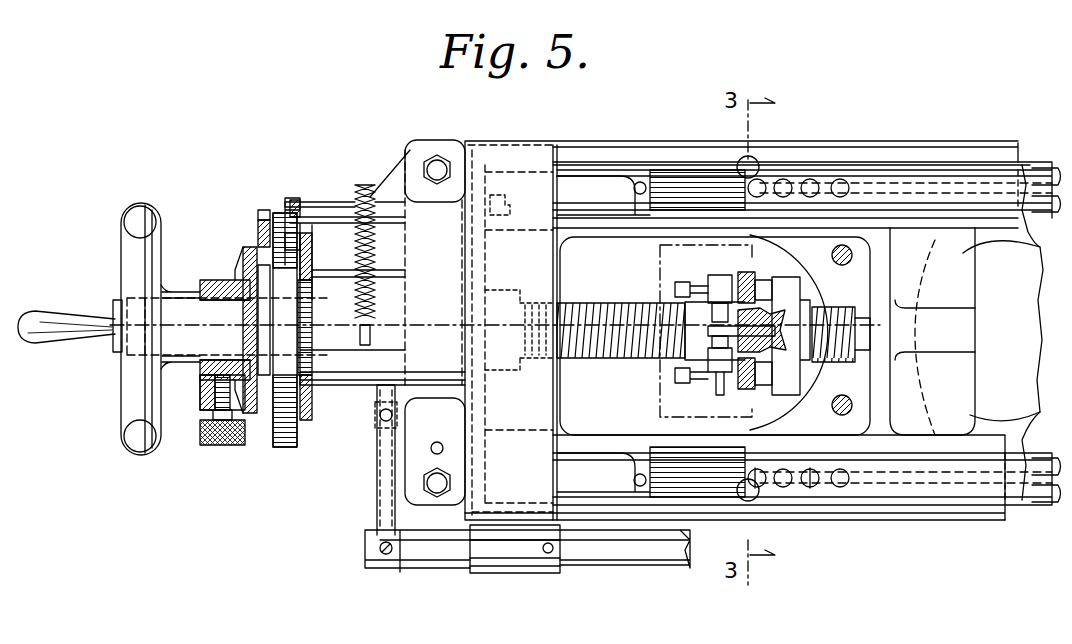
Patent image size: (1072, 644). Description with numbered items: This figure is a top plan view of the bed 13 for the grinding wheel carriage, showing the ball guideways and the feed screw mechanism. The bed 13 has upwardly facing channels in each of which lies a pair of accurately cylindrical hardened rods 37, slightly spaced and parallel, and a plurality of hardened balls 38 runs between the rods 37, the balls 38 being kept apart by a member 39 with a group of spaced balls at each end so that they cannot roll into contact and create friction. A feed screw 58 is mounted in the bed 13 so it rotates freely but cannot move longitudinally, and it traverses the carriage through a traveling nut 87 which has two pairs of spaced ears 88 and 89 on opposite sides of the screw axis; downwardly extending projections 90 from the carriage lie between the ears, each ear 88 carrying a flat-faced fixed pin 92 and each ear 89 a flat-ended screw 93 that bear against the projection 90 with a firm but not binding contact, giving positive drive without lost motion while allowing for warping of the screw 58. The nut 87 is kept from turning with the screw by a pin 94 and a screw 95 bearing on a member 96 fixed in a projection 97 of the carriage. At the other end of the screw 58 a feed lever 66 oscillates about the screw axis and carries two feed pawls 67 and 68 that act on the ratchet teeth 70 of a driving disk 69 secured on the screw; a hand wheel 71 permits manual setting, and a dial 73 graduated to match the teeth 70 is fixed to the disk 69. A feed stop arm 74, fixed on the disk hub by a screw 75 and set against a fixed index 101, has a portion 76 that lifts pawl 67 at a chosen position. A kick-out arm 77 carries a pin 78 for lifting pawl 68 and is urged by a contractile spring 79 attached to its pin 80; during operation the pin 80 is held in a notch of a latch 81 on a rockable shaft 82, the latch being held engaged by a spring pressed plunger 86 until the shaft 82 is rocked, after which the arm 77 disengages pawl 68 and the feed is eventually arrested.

The bed 13 is at (885, 418).
The hardened rods 37 is at (663, 492).
The hardened balls 38 is at (812, 488).
The spacing member 39 is at (785, 185).
The feed screw 58 is at (585, 318).
The feed lever 66 is at (380, 357).
The feed pawl 67 is at (275, 325).
The feed pawl 68 is at (300, 250).
The driving disk 69 is at (300, 408).
The ratchet teeth 70 is at (282, 447).
The hand wheel 71 is at (130, 392).
The dial 73 is at (262, 432).
The feed stop arm 74 is at (247, 280).
The screw 75 is at (216, 446).
The portion 76 is at (262, 210).
The kick-out arm 77 is at (312, 275).
The pin 78 is at (262, 238).
The contractile spring 79 is at (360, 190).
The pin 80 is at (315, 325).
The latch 81 is at (378, 502).
The shaft 82 is at (610, 555).
The spring pressed plunger 86 is at (380, 418).
The traveling nut 87 is at (802, 312).
The ears 88 is at (785, 388).
The ears 89 is at (714, 372).
The projections 90 is at (752, 388).
The fixed pin 92 is at (795, 418).
The screw 93 is at (684, 384).
The pin 94 is at (712, 318).
The screw 95 is at (722, 395).
The member 96 is at (712, 338).
The projection 97 is at (773, 330).
The fixed index 101 is at (292, 200).